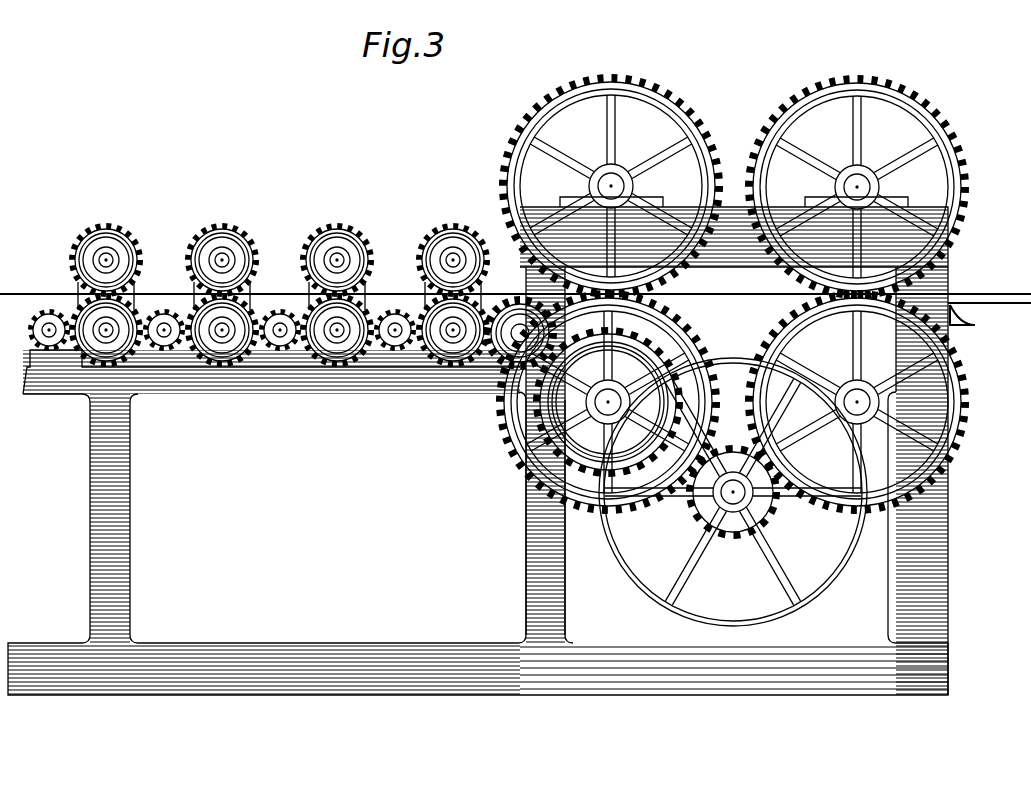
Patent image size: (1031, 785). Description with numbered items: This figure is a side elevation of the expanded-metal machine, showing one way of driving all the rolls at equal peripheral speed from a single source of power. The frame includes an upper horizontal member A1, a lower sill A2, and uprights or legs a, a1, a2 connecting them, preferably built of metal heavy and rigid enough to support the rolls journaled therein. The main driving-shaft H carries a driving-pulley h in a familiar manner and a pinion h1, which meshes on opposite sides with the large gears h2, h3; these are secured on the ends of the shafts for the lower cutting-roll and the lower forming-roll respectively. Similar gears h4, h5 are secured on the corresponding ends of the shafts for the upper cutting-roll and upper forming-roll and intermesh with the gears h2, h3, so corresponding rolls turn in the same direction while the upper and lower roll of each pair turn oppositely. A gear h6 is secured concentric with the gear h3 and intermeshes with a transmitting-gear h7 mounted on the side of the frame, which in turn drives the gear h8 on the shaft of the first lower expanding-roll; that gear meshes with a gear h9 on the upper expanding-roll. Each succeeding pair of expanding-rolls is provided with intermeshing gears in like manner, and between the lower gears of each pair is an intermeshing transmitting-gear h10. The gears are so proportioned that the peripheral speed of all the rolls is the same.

The upright a is at (940, 552).
The upright a1 is at (518, 578).
The upright a2 is at (127, 563).
The upper horizontal member A1 is at (740, 237).
The lower sill A2 is at (812, 677).
The driving-pulley h is at (833, 583).
The main driving-shaft H is at (733, 505).
The pinion h1 is at (767, 503).
The gear h2 is at (970, 395).
The gear h3 is at (512, 443).
The gear h4 is at (970, 157).
The gear h5 is at (690, 110).
The gear h6 is at (525, 463).
The transmitting-gear h7 is at (493, 370).
The gear h8 is at (433, 348).
The gear h9 is at (450, 237).
The transmitting-gear h10 is at (395, 305).